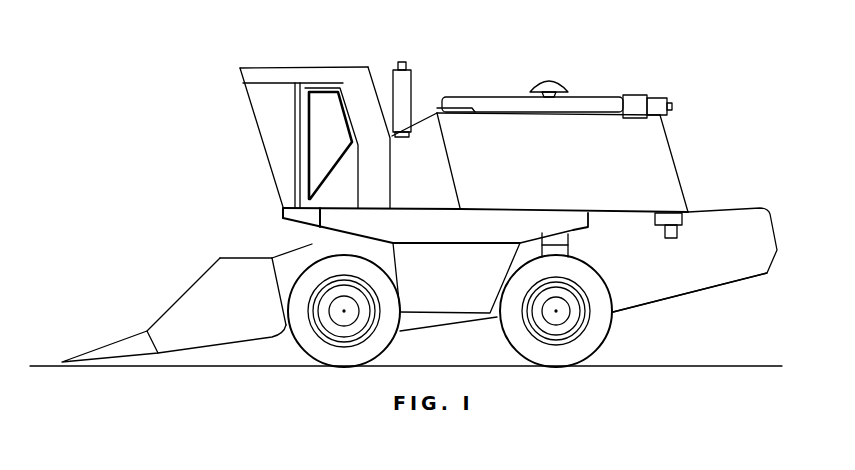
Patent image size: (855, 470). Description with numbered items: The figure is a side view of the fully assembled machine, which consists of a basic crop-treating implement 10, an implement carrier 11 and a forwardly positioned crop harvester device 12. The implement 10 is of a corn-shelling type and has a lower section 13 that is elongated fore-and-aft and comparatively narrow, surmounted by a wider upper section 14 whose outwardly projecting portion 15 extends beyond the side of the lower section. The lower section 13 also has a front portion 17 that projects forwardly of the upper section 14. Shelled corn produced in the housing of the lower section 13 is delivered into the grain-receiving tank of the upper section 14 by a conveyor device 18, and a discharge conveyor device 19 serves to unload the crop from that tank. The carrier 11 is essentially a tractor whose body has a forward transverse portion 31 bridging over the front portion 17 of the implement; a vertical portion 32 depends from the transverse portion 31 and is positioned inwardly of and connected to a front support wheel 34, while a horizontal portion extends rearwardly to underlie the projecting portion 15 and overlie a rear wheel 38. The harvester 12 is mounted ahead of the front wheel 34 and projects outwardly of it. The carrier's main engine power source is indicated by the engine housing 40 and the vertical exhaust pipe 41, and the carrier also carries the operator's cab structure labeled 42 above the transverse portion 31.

The basic implement 10 is at (736, 199).
The implement carrier 11 is at (373, 63).
The crop harvester device 12 is at (218, 253).
The lower section 13 is at (723, 270).
The upper section 14 is at (657, 151).
The outwardly projecting portion 15 is at (668, 197).
The front portion 17 is at (282, 265).
The conveyor device 18 is at (552, 80).
The discharge conveyor device 19 is at (600, 97).
The forward transverse portion 31 is at (338, 213).
The vertical portion 32 is at (386, 263).
The front support wheel 34 is at (385, 340).
The rear wheel 38 is at (593, 345).
The engine housing 40 is at (419, 146).
The vertical exhaust pipe 41 is at (406, 82).
The cab roof 42 is at (330, 78).